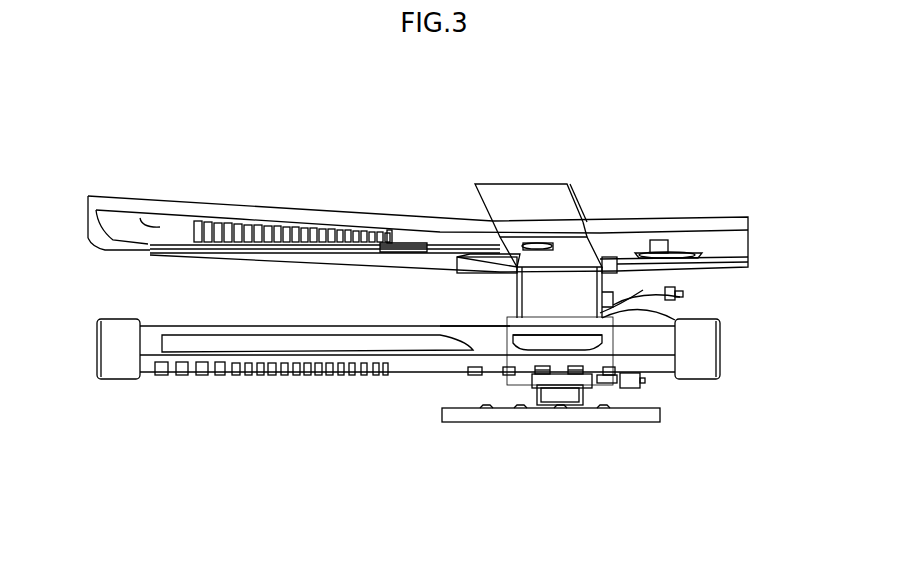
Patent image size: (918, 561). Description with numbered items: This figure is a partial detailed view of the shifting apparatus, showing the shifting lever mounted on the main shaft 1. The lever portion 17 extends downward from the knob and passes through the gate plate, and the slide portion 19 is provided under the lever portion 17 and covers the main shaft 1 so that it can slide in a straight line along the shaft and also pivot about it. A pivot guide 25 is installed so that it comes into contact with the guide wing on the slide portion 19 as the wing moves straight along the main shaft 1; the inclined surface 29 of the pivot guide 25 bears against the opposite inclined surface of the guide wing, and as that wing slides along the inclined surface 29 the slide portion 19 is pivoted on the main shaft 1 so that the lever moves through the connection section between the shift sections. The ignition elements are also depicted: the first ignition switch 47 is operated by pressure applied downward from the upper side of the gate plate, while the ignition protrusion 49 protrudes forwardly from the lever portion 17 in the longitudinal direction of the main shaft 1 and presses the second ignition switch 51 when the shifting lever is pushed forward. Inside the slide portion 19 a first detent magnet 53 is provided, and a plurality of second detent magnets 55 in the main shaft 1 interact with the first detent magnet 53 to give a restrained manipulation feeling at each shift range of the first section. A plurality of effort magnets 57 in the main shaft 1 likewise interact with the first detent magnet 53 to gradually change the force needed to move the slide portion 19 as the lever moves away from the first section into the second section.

The main shaft 1 is at (158, 330).
The lever portion 17 is at (578, 197).
The slide portion 19 is at (613, 305).
The pivot guide 25 is at (424, 343).
The inclined surface 29 is at (460, 334).
The first ignition switch 47 is at (672, 243).
The ignition protrusion 49 is at (643, 290).
The second ignition switch 51 is at (700, 297).
The first detent magnet 53 is at (579, 373).
The second detent magnets 55 is at (474, 377).
The effort magnets 57 is at (201, 376).